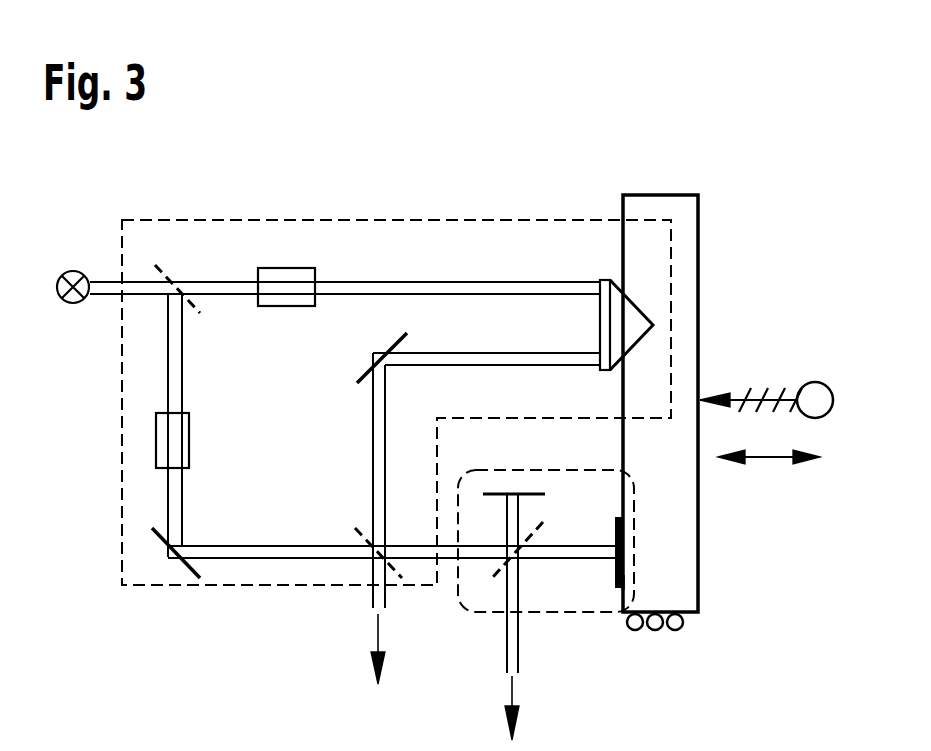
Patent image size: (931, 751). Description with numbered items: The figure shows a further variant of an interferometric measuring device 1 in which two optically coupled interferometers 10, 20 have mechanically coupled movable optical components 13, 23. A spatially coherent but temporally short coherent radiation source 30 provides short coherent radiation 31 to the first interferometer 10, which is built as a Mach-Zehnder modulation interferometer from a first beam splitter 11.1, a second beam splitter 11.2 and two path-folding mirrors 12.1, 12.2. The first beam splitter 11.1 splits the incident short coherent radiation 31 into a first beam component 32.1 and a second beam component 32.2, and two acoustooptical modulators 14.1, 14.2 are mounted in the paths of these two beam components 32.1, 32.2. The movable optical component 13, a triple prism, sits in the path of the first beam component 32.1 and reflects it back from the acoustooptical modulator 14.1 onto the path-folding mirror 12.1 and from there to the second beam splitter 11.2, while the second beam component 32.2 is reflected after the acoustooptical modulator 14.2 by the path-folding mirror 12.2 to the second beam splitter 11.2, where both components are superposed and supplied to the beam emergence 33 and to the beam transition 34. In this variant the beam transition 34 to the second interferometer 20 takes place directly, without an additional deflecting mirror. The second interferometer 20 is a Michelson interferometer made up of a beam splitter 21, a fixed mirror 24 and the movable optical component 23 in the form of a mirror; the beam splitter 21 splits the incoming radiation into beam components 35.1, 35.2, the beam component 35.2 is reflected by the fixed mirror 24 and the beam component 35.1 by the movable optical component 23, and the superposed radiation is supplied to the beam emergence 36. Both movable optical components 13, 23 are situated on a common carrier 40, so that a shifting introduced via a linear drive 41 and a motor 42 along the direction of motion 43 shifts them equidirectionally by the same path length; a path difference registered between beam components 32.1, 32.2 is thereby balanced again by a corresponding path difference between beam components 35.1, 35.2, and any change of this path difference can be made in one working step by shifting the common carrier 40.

The interferometric measuring device 1 is at (776, 180).
The first interferometer 10 is at (210, 220).
The first beam splitter 11.1 is at (160, 265).
The second beam splitter 11.2 is at (357, 535).
The path-folding mirror 12.1 is at (393, 347).
The path-folding mirror 12.2 is at (163, 538).
The movable optical component 13 is at (623, 286).
The acoustooptical modulator 14.1 is at (272, 275).
The acoustooptical modulator 14.2 is at (160, 433).
The second interferometer 20 is at (633, 559).
The beam splitter 21 is at (493, 577).
The movable optical component 23 is at (623, 577).
The fixed mirror 24 is at (502, 493).
The radiation source 30 is at (73, 270).
The short coherent radiation 31 is at (103, 292).
The first beam component 32.1 is at (427, 287).
The second beam component 32.2 is at (176, 486).
The beam emergence 33 is at (378, 638).
The beam transition 34 is at (447, 560).
The beam component 35.1 is at (596, 555).
The beam component 35.2 is at (515, 512).
The beam emergence 36 is at (512, 695).
The common carrier 40 is at (660, 195).
The linear drive 41 is at (738, 385).
The motor 42 is at (820, 382).
The direction of motion 43 is at (767, 460).